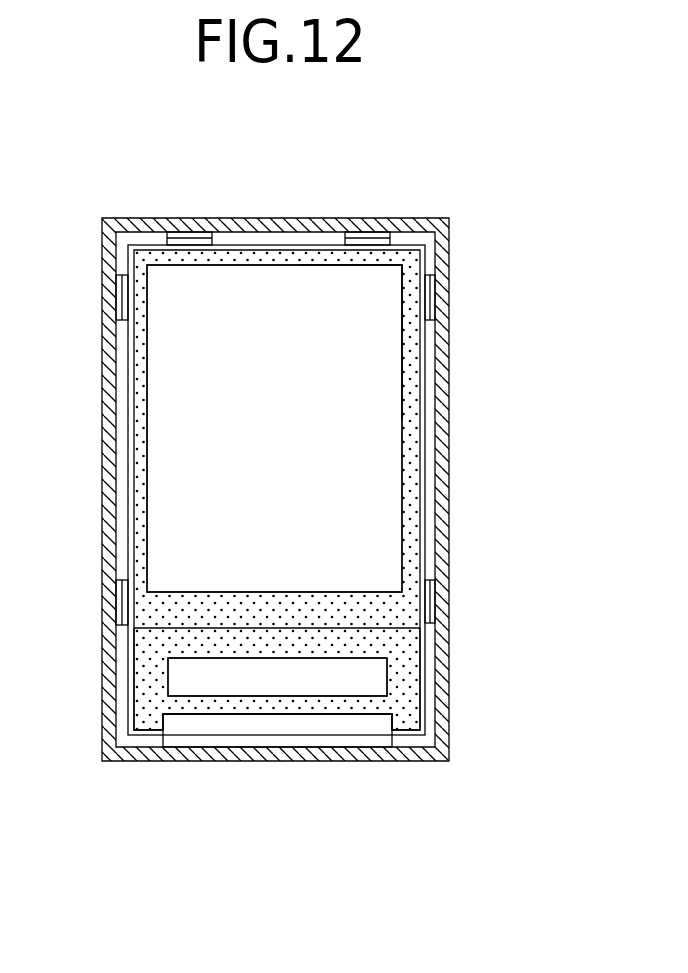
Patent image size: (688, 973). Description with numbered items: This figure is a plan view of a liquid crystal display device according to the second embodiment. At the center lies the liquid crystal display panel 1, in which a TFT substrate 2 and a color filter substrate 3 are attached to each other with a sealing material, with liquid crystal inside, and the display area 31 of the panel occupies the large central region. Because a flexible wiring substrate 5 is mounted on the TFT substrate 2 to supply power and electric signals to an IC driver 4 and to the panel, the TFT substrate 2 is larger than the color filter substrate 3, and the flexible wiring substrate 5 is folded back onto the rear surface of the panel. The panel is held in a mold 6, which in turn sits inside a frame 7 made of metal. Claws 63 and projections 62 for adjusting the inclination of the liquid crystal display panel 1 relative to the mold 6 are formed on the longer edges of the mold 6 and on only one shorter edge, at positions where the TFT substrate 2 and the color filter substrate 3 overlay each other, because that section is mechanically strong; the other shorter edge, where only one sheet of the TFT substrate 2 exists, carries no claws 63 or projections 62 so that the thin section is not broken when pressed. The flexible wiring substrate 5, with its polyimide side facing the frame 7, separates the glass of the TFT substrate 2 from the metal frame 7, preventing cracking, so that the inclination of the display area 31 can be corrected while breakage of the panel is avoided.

The liquid crystal display panel 1 is at (384, 443).
The TFT substrate 2 is at (413, 662).
The color filter substrate 3 is at (412, 457).
The display area 31 is at (403, 280).
The IC driver 4 is at (378, 675).
The flexible wiring substrate 5 is at (375, 732).
The mold 6 is at (425, 525).
The projections 62 is at (428, 578).
The claws 63 is at (437, 583).
The frame 7 is at (112, 482).